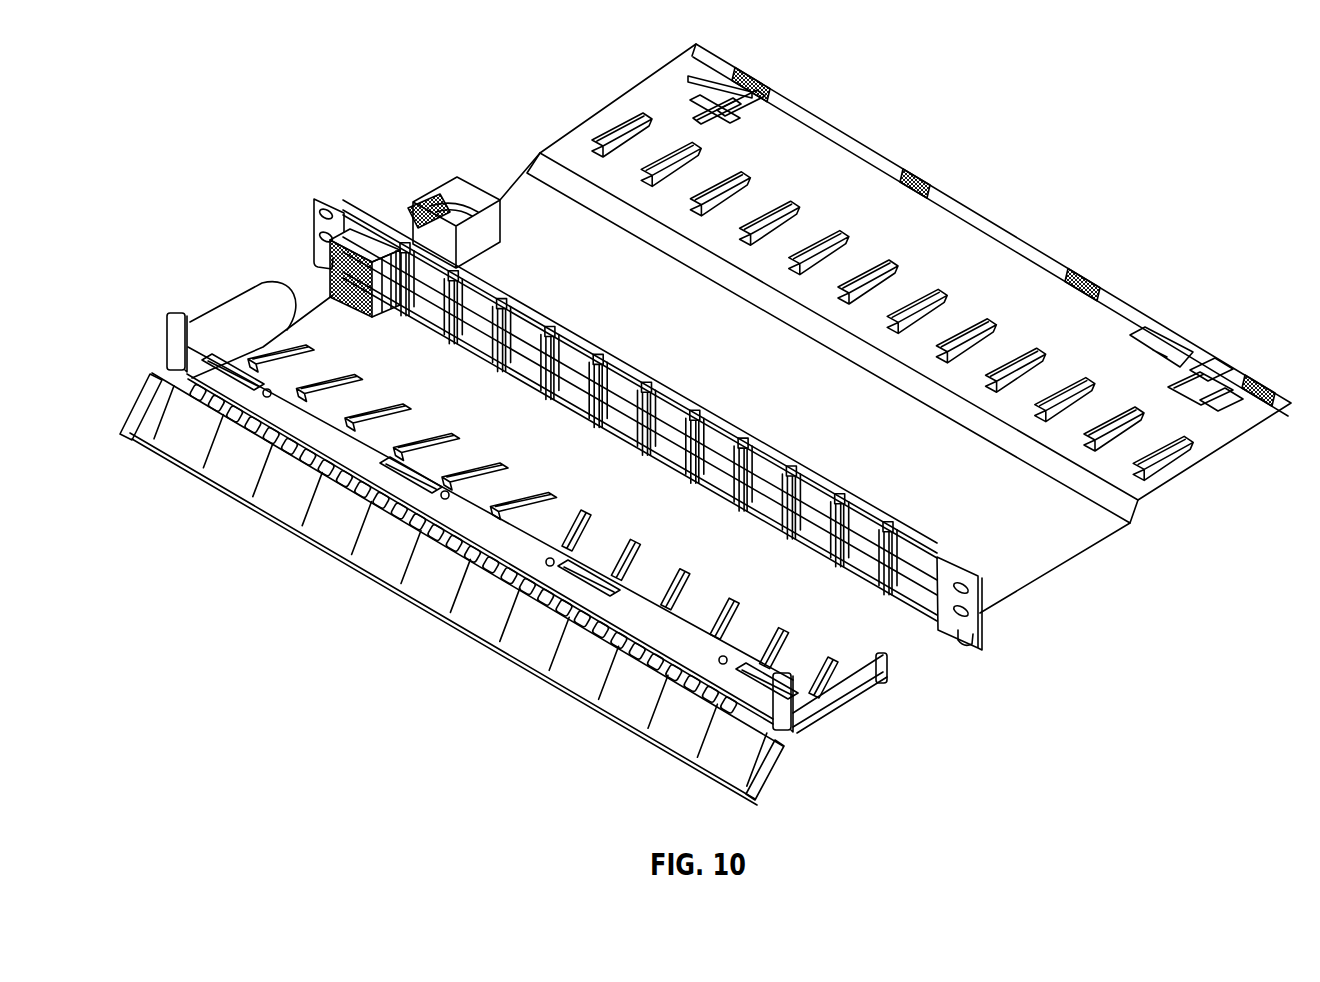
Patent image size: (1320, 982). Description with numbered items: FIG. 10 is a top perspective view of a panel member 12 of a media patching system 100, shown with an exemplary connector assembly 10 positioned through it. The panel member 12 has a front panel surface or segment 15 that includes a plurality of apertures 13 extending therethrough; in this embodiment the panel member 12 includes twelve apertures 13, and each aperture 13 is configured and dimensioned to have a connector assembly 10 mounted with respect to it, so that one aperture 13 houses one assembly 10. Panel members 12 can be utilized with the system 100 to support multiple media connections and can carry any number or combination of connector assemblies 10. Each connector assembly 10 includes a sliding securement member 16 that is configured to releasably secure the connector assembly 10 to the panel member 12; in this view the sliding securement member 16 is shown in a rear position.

The media patching system 100 is at (196, 134).
The connector assembly 10 is at (457, 177).
The panel member 12 is at (378, 215).
The aperture 13 is at (920, 577).
The front panel surface/segment 15 is at (888, 568).
The sliding securement member 16 is at (418, 200).